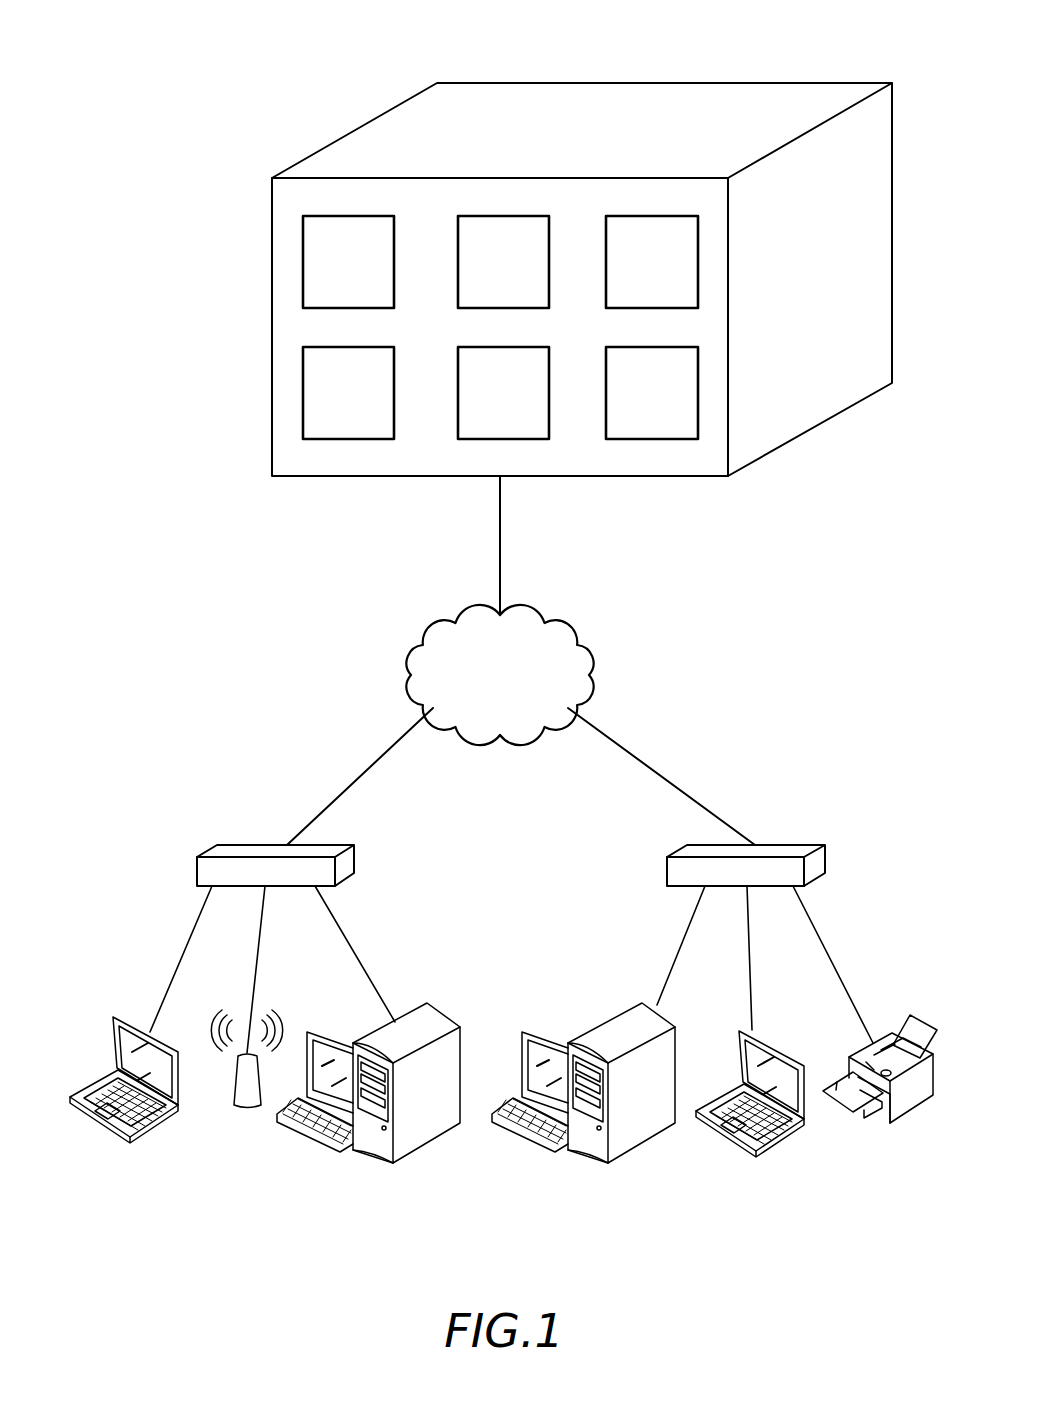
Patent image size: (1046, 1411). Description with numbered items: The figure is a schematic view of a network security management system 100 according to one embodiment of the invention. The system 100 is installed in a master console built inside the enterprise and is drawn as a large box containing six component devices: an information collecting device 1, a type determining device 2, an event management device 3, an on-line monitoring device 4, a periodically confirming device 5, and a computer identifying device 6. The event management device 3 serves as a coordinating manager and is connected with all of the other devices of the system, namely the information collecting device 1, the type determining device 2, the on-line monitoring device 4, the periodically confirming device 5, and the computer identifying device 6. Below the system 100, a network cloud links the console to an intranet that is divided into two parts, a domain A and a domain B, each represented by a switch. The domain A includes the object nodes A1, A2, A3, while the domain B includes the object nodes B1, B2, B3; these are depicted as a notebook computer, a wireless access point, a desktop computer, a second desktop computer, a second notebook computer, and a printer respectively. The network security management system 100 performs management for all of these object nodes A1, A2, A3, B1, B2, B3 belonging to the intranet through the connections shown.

The network security management system 100 is at (307, 86).
The information collecting device 1 is at (320, 257).
The type determining device 2 is at (322, 397).
The event management device 3 is at (500, 230).
The on-line monitoring device 4 is at (483, 423).
The periodically confirming device 5 is at (677, 257).
The computer identifying device 6 is at (678, 397).
The domain A is at (208, 793).
The object node A1 is at (90, 1102).
The object node A2 is at (244, 1104).
The object node A3 is at (368, 1138).
The domain B is at (840, 793).
The object node B1 is at (585, 1145).
The object node B2 is at (712, 1117).
The object node B3 is at (882, 1113).